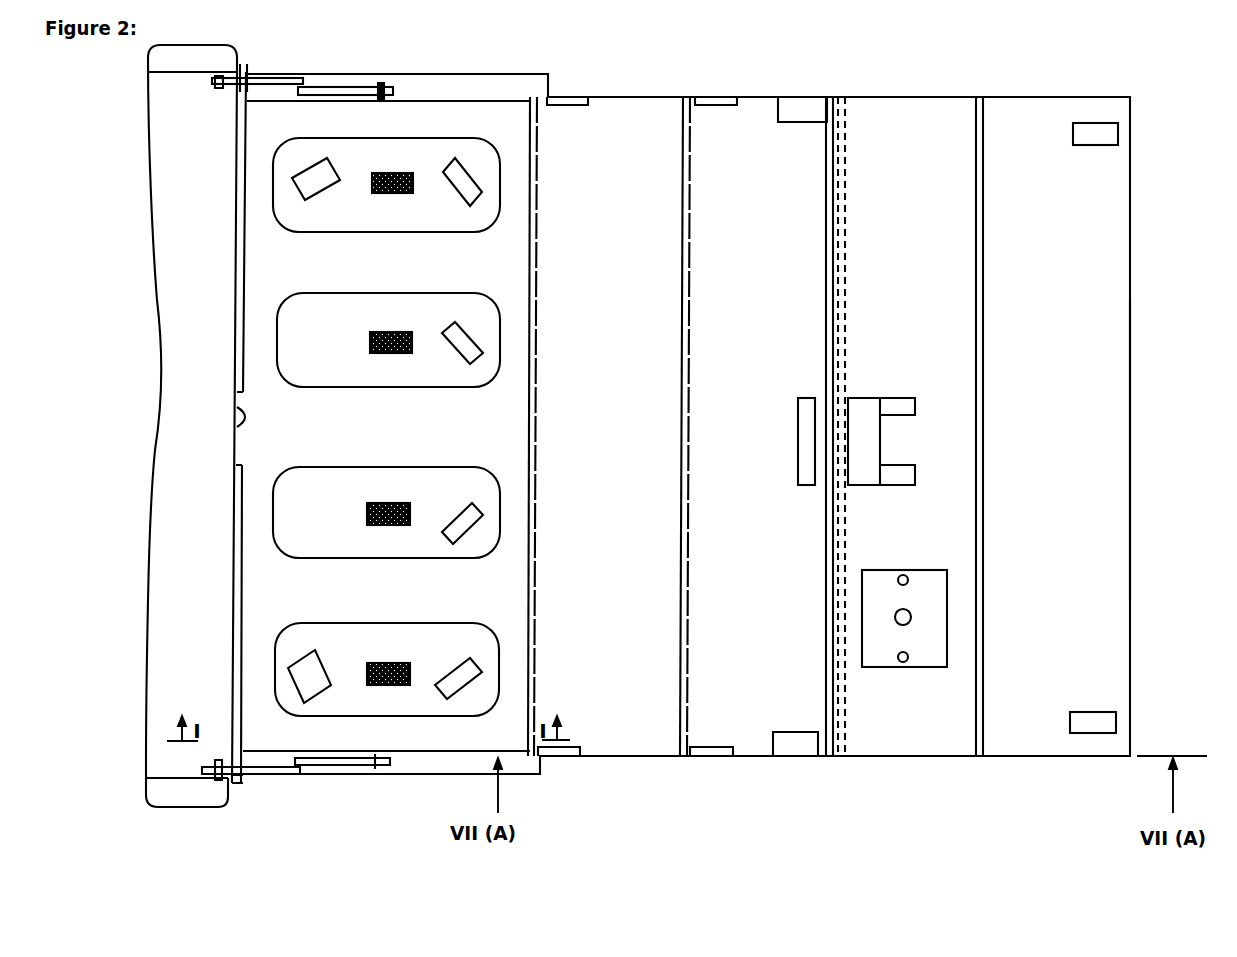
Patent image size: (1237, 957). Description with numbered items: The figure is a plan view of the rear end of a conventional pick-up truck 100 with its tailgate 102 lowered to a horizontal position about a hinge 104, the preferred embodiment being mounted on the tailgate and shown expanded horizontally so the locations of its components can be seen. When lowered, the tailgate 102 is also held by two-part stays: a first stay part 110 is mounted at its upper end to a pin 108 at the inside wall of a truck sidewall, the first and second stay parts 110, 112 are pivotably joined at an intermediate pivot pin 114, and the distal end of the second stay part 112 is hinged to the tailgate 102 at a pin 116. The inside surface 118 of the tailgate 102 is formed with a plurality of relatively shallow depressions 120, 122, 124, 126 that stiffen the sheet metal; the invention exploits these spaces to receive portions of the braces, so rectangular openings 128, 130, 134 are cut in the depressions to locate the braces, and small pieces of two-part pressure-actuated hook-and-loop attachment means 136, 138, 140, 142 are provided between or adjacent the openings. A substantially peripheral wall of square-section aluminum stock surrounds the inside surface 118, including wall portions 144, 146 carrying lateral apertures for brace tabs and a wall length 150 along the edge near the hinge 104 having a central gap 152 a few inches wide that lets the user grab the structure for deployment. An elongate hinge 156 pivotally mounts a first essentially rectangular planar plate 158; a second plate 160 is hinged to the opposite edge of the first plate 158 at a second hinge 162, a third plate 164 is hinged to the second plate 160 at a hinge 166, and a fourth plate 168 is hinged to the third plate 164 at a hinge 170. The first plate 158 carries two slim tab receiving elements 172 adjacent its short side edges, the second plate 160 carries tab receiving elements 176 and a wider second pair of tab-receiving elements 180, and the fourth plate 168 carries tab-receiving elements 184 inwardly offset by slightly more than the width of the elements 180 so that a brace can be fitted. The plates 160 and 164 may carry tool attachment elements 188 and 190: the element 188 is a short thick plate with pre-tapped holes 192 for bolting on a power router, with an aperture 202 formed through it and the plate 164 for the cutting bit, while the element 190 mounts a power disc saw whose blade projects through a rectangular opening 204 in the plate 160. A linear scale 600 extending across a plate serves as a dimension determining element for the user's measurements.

The pick-up truck 100 is at (163, 653).
The tailgate 102 is at (528, 777).
The hinge 104 is at (248, 67).
The pin 108 is at (243, 67).
The stay part 110 is at (259, 776).
The stay part 112 is at (337, 766).
The intermediate pivot pin 114 is at (305, 77).
The pin 116 is at (382, 86).
The inside surface 118 is at (508, 115).
The depression 120 is at (280, 672).
The depression 122 is at (282, 186).
The depression 124 is at (293, 497).
The depression 126 is at (293, 312).
The rectangular opening 128 is at (315, 172).
The rectangular opening 130 is at (465, 186).
The rectangular opening 134 is at (470, 358).
The two-part pressure-actuated attachment means 136 is at (395, 194).
The two-part pressure-actuated attachment means 138 is at (368, 341).
The two-part pressure-actuated attachment means 140 is at (362, 517).
The two-part pressure-actuated attachment means 142 is at (367, 678).
The wall portion 144 is at (428, 755).
The wall portion 146 is at (478, 96).
The peripheral wall length 150 is at (245, 112).
The central gap 152 is at (240, 424).
The elongate hinge 156 is at (532, 658).
The first plate 158 is at (645, 113).
The second plate 160 is at (745, 118).
The second hinge 162 is at (690, 756).
The third plate 164 is at (925, 727).
The hinge 166 is at (828, 708).
The fourth plate 168 is at (1100, 538).
The hinge 170 is at (975, 757).
The tab receiving element 172 is at (572, 97).
The tab receiving element 176 is at (722, 96).
The tab-receiving element 180 is at (803, 103).
The tab-receiving element 184 is at (1103, 133).
The tool attachment element 188 is at (932, 637).
The tool attachment element 190 is at (870, 440).
The pre-tapped hole 192 is at (907, 580).
The aperture 202 is at (905, 617).
The opening 204 is at (806, 400).
The linear scale 600 is at (848, 122).